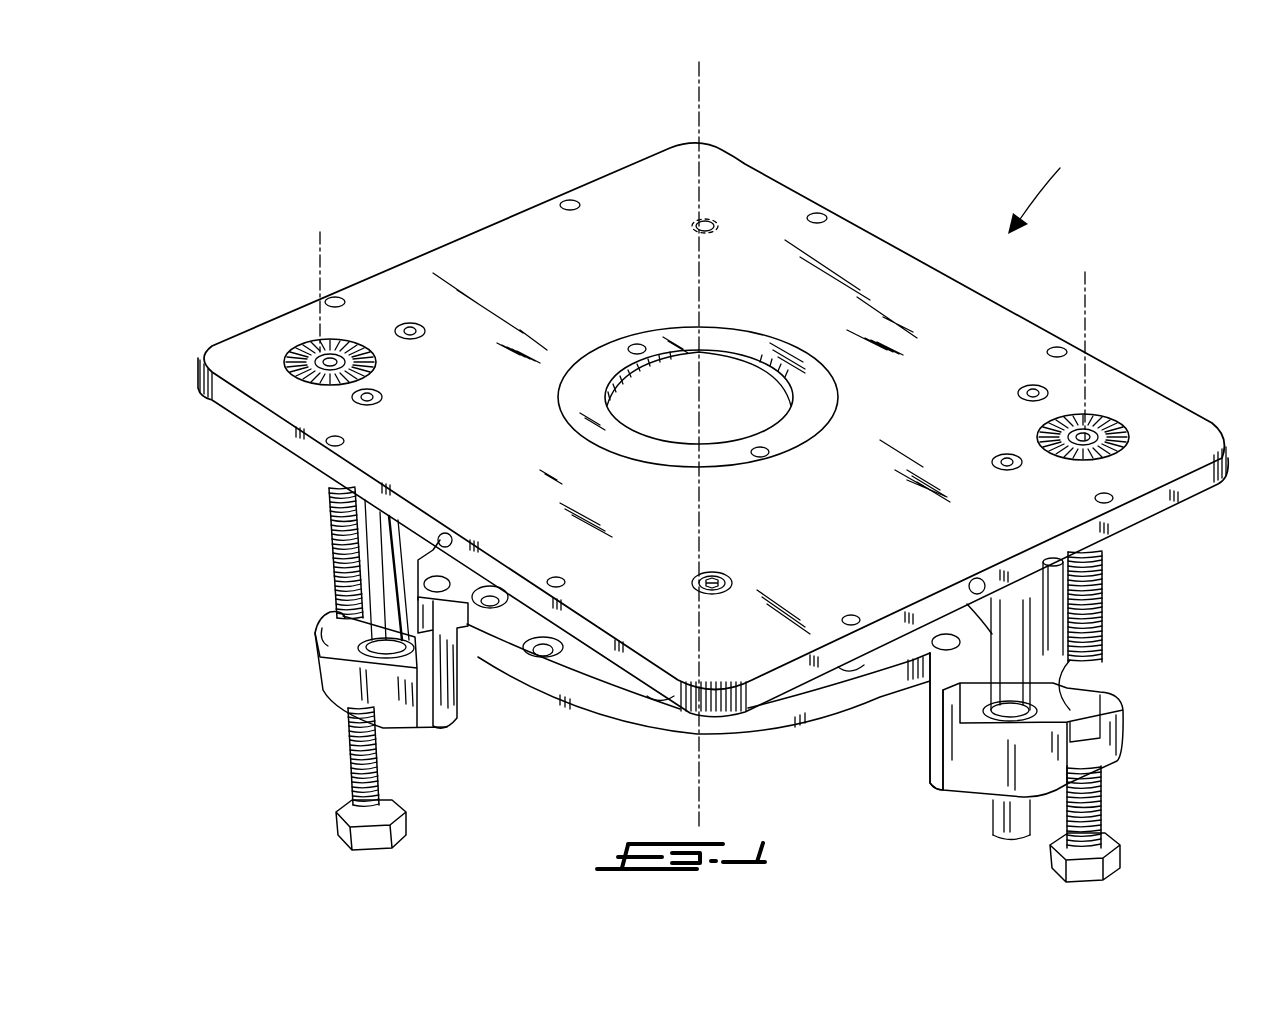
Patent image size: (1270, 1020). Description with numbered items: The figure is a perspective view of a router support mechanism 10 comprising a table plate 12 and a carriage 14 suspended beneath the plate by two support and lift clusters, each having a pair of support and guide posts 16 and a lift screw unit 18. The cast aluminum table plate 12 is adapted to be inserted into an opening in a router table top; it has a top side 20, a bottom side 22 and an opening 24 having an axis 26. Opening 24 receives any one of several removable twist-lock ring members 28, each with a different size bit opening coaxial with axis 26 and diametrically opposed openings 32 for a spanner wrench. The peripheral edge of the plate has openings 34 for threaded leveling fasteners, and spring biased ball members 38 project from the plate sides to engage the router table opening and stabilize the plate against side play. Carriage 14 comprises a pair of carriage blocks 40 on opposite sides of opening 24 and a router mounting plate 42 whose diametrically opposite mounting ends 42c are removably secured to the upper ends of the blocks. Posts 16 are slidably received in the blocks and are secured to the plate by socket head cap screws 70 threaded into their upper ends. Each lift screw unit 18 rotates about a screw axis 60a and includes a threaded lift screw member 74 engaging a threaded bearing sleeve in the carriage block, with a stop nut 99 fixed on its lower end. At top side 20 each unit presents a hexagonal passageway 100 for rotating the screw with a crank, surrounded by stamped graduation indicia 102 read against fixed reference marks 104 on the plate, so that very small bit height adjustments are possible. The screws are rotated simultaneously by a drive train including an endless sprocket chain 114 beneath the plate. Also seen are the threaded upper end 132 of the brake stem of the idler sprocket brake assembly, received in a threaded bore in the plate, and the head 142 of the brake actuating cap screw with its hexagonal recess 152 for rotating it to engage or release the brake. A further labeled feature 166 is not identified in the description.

The router support mechanism 10 is at (1060, 168).
The table plate 12 is at (1116, 350).
The carriage 14 is at (540, 740).
The support and guide posts 16 is at (380, 597).
The lift screw unit 18 is at (312, 552).
The top side 20 is at (928, 284).
The bottom side 22 is at (1205, 485).
The opening 24 is at (560, 430).
The axis 26 is at (703, 92).
The removable ring members 28 is at (636, 462).
The diametrically opposed openings 32 is at (637, 343).
The openings 34 is at (570, 200).
The spring biased ball member 38 is at (446, 532).
The carriage blocks 40 is at (300, 690).
The router mounting plate 42 is at (672, 757).
The mounting ends 42c is at (450, 665).
The screw axis 60a is at (318, 243).
The socket head cap screws 70 is at (425, 330).
The threaded lift screw member 74 is at (330, 570).
The stop nut 99 is at (405, 818).
The hexagonal passageway 100 is at (312, 358).
The indicia 102 is at (352, 340).
The fixed reference marks 104 is at (300, 345).
The endless sprocket chain 114 is at (255, 457).
The externally threaded upper end 132 is at (692, 588).
The head 142 is at (730, 580).
The hexagonal recess 152 is at (712, 572).
The center alignment hole 166 is at (716, 231).